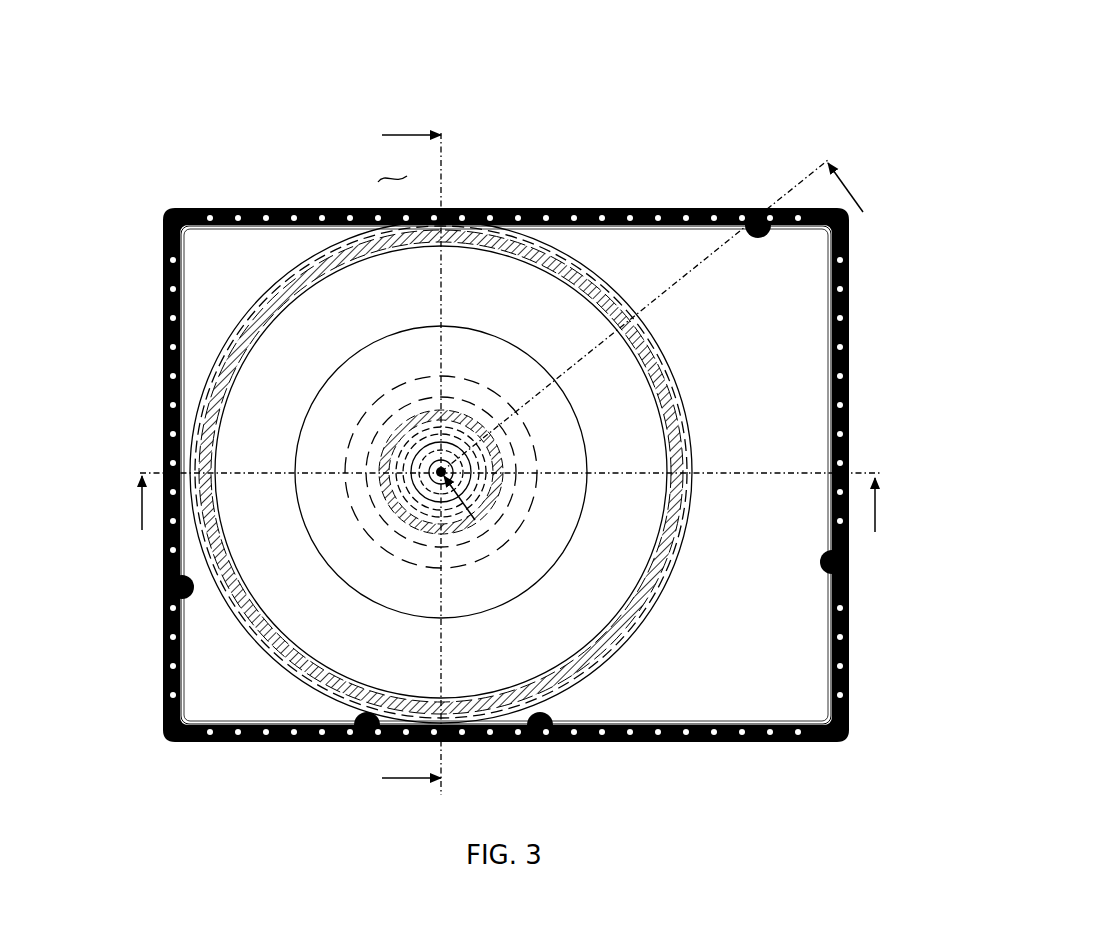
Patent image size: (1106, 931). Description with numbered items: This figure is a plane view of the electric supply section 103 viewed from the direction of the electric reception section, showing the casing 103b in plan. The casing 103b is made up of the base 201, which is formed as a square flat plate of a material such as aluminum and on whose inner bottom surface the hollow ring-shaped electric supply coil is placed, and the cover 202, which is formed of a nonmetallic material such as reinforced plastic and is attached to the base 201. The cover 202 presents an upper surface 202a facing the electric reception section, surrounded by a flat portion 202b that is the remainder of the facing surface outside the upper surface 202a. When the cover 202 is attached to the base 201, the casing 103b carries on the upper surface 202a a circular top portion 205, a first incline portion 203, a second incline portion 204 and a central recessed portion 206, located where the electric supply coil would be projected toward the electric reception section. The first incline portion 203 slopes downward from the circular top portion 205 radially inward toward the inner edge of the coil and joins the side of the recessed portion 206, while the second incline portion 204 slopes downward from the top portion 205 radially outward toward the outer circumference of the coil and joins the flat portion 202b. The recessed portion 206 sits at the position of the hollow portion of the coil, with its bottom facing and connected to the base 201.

The electric supply section 103 is at (556, 100).
The casing 103b is at (1000, 660).
The base 201 is at (848, 712).
The cover 202 is at (813, 620).
The upper surface 202a is at (597, 590).
The flat portion 202b is at (765, 390).
The first incline portion 203 is at (485, 350).
The second incline portion 204 is at (298, 355).
The top portion 205 is at (370, 597).
The recessed portion 206 is at (397, 453).